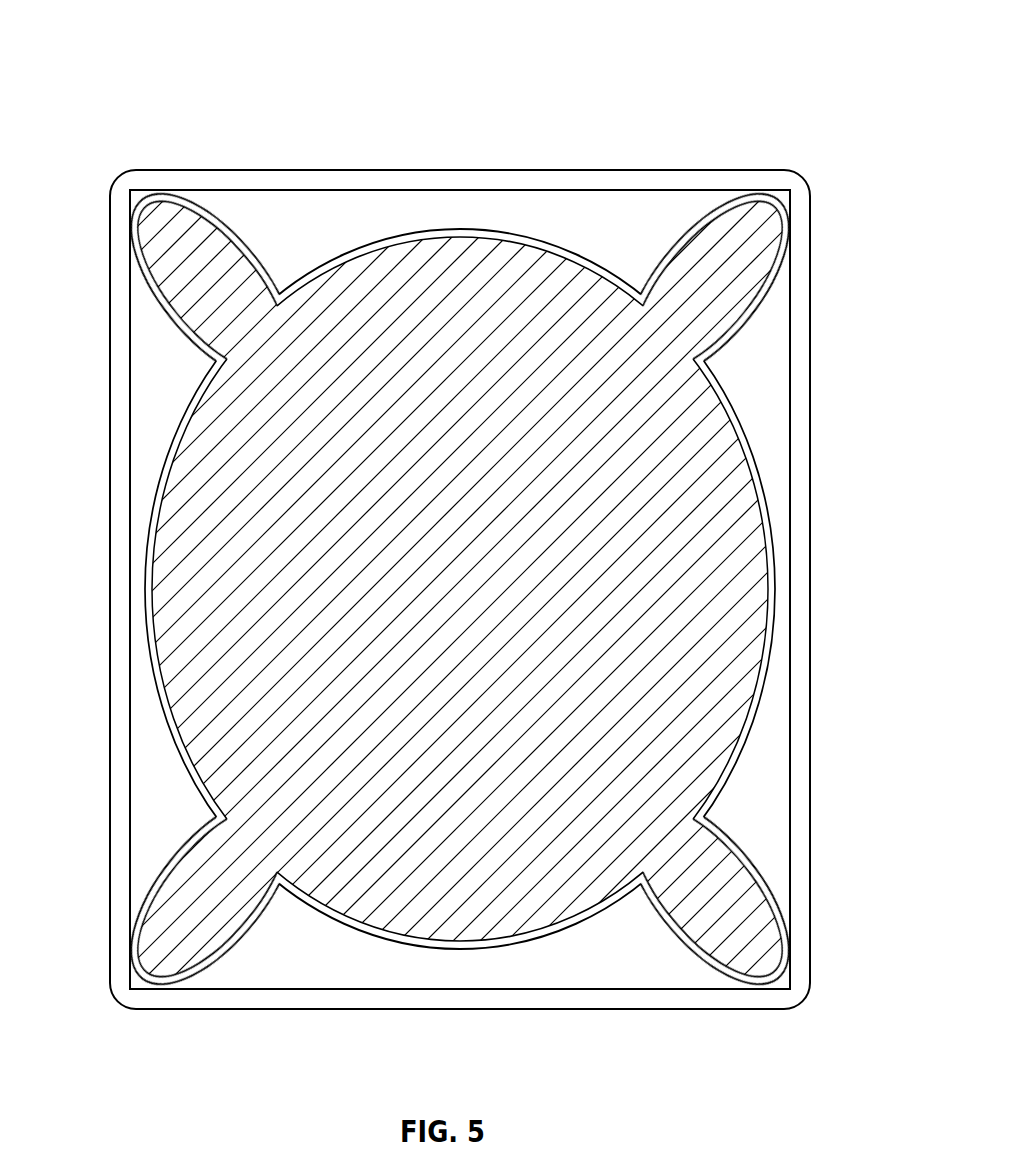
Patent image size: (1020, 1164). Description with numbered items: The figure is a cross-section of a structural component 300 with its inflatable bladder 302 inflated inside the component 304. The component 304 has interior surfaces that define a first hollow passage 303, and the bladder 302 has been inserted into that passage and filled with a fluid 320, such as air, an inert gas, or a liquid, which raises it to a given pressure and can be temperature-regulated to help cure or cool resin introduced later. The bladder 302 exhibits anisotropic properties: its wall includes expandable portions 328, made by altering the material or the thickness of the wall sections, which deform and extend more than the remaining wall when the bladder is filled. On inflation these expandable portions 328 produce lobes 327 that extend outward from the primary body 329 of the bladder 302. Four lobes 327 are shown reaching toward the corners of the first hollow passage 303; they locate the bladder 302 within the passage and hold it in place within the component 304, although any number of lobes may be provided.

The structural component 300 is at (778, 46).
The bladder 302 is at (153, 523).
The first hollow passage 303 is at (753, 763).
The component 304 is at (813, 456).
The fluid 320 is at (473, 572).
The lobes 327 is at (202, 228).
The expandable portions 328 is at (707, 207).
The primary body 329 is at (467, 265).